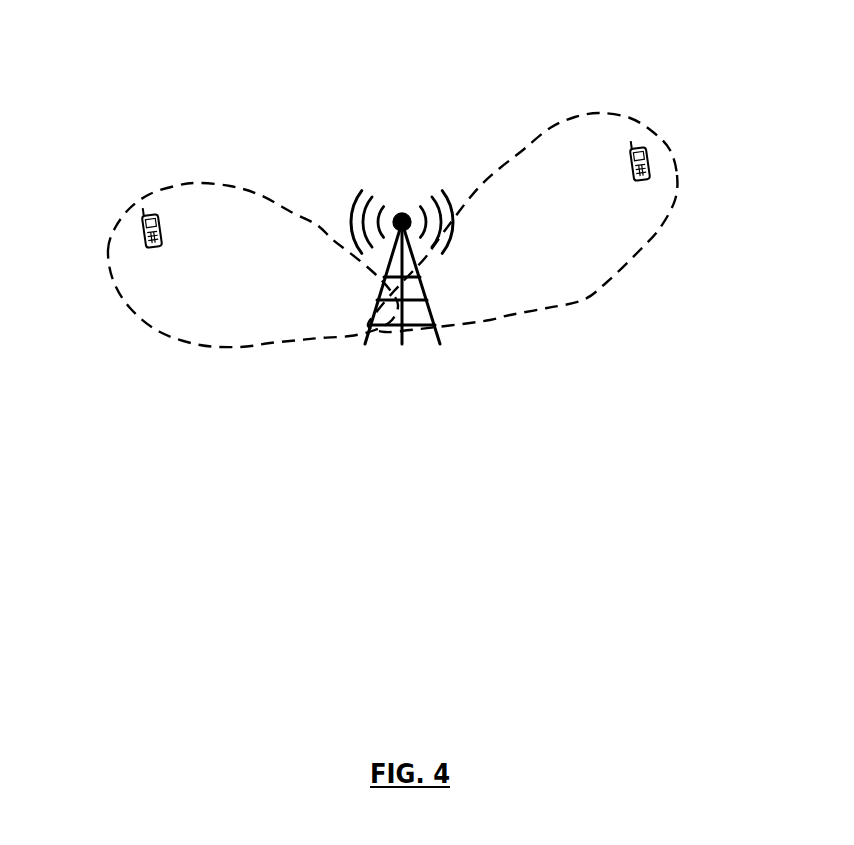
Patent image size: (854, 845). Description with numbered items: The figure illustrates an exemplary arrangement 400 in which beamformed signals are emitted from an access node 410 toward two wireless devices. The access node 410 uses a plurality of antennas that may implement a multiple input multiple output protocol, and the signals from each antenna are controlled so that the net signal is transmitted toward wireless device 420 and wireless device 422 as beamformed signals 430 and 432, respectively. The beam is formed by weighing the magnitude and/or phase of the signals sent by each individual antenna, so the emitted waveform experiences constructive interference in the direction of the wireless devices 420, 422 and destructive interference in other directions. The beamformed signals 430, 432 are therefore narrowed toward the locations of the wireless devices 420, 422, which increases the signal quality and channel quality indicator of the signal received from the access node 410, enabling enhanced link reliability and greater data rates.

The wireless communication system 400 is at (432, 32).
The access node 410 is at (412, 283).
The wireless device 420 is at (190, 234).
The wireless device 422 is at (602, 167).
The beamformed signal 430 is at (212, 265).
The beamformed signal 432 is at (561, 221).